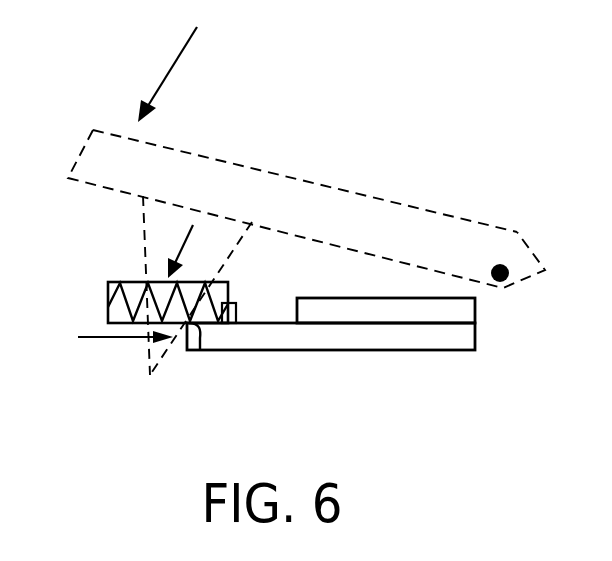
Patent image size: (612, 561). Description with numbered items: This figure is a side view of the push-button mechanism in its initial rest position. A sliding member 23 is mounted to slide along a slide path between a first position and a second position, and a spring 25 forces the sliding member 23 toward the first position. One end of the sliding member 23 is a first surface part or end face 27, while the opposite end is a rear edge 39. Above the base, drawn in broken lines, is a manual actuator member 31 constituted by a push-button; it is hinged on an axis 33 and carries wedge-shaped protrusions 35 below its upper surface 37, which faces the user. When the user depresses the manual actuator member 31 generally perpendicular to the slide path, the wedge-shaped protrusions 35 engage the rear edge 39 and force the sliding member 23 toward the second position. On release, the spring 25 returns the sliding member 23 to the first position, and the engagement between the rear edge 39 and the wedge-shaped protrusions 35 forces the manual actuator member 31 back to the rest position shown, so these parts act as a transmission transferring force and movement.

The sliding member 23 is at (418, 338).
The spring 25 is at (120, 308).
The end face 27 is at (477, 318).
The manual actuator member 31 is at (297, 197).
The axis 33 is at (500, 264).
The wedge-shaped protrusions 35 is at (142, 224).
The upper surface 37 is at (200, 154).
The rear edge 39 is at (196, 352).